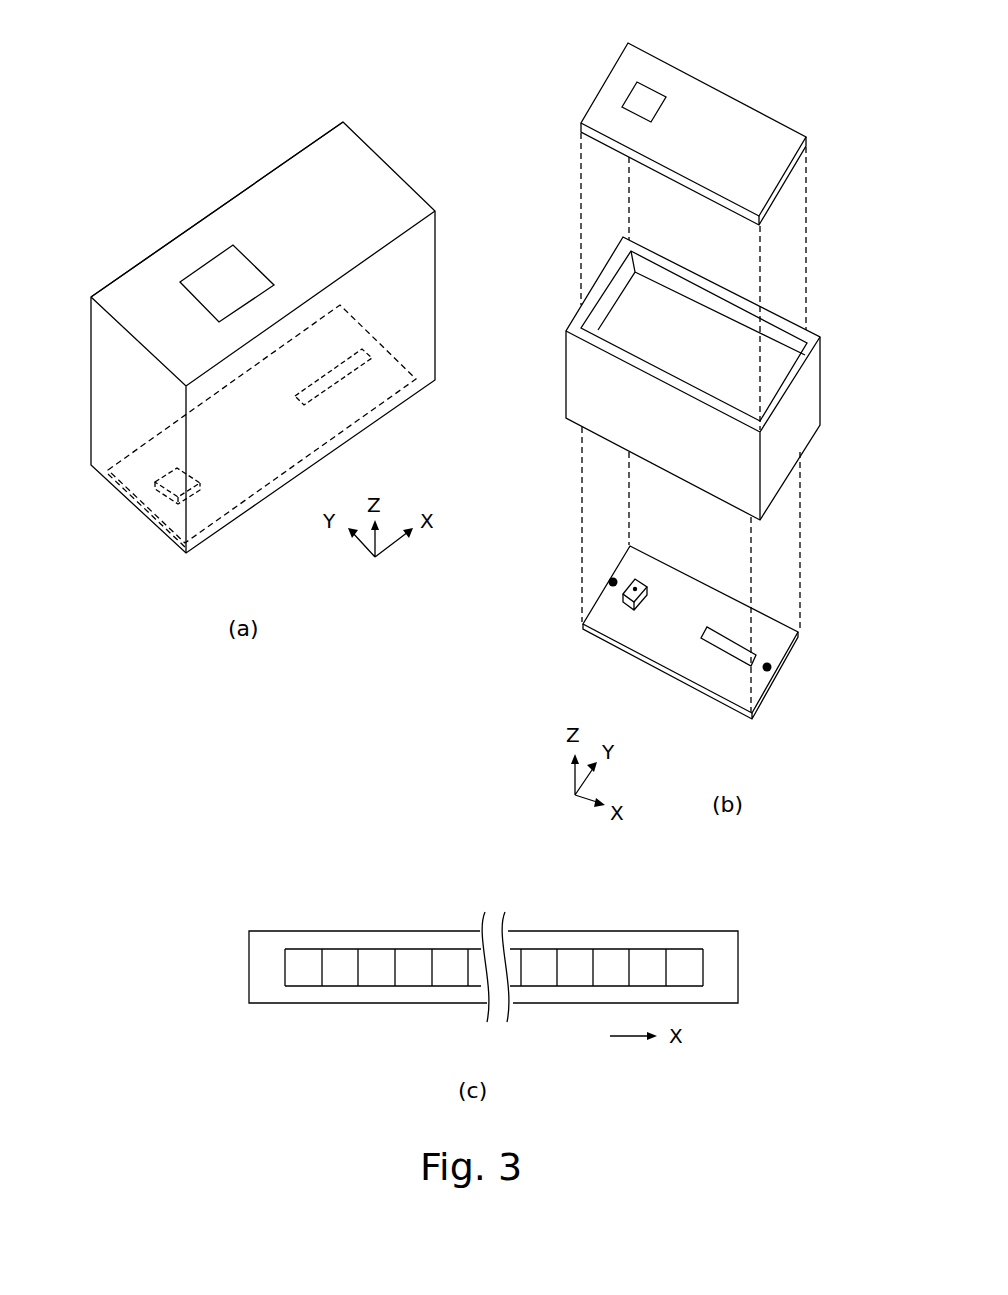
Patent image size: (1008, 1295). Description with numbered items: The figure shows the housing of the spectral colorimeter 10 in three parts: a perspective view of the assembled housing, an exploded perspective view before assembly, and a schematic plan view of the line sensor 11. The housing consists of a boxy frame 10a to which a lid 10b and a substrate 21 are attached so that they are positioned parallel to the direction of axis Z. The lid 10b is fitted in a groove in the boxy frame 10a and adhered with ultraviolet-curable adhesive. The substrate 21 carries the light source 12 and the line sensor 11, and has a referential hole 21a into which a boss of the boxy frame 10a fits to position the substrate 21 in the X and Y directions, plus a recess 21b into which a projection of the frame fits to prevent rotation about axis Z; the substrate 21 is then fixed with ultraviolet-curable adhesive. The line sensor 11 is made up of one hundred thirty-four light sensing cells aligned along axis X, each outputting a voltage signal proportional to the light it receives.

The spectral colorimeter 10 is at (461, 357).
The boxy frame 10a is at (400, 290).
The lid 10b is at (368, 188).
The line sensor 11 is at (363, 352).
The light source 12 is at (153, 513).
The substrate 21 is at (484, 512).
The referential hole 21a is at (770, 670).
The recess 21b is at (610, 583).